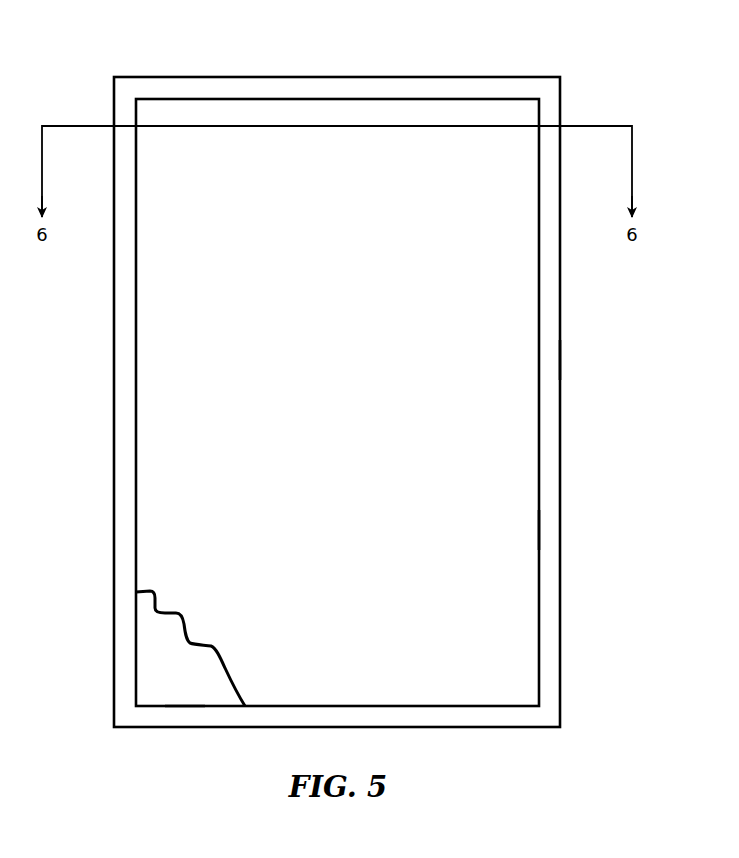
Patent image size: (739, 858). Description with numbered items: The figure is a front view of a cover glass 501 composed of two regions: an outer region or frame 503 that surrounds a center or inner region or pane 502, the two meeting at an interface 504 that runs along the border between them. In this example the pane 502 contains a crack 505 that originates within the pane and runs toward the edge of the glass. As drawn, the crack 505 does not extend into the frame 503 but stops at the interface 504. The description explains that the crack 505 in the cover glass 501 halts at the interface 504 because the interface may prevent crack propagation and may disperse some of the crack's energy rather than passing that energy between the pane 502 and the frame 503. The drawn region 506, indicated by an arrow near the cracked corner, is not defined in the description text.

The cover glass 501 is at (346, 60).
The pane 502 is at (513, 457).
The frame 503 is at (550, 360).
The interface 504 is at (540, 531).
The crack 505 is at (154, 608).
The cracked region 506 is at (153, 667).